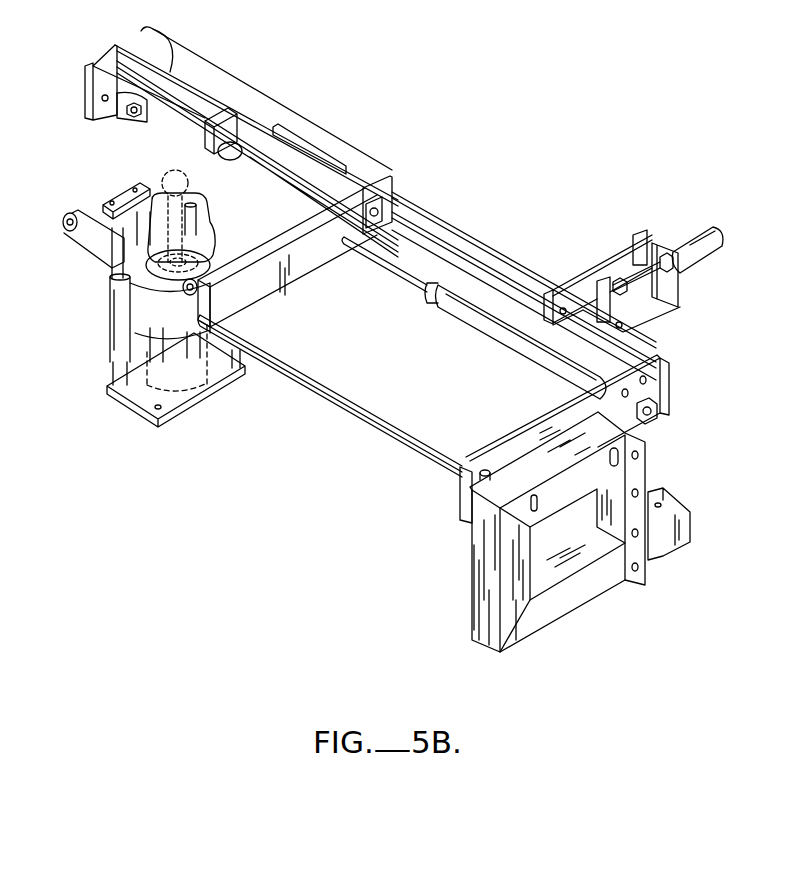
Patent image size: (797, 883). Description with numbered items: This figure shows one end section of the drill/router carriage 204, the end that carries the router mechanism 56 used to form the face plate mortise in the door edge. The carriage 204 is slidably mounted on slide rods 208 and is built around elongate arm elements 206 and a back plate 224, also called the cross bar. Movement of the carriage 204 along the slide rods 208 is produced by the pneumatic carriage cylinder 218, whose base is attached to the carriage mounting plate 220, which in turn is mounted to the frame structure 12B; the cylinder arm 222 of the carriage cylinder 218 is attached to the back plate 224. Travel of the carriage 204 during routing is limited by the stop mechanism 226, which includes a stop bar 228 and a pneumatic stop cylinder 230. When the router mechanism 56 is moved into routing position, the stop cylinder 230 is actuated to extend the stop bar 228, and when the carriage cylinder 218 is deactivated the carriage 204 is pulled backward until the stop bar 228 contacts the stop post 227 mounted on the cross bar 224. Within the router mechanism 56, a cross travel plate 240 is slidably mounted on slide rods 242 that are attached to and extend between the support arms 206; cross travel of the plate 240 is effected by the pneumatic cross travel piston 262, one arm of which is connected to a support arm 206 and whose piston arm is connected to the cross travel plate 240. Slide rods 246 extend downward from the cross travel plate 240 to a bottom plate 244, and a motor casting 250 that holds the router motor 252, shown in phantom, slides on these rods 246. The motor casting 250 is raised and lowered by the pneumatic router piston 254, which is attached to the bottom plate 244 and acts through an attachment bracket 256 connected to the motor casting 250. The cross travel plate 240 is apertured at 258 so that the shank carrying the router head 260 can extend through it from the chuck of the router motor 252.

The frame structure 12B is at (533, 613).
The router mechanism 56 is at (81, 286).
The drill/router carriage 204 is at (243, 75).
The elongate arm elements 206 is at (140, 31).
The slide rods 208 is at (147, 127).
The carriage cylinder 218 is at (495, 337).
The carriage mounting plate 220 is at (637, 423).
The cylinder arm 222 is at (405, 267).
The back plate 224 is at (297, 280).
The stop mechanism 226 is at (602, 233).
The stop post 227 is at (392, 197).
The stop bar 228 is at (598, 262).
The stop cylinder 230 is at (700, 247).
The cross travel plate 240 is at (297, 228).
The slide rods 242 is at (190, 130).
The bottom plate 244 is at (130, 400).
The slide rods 246 is at (112, 374).
The motor casting 250 is at (110, 318).
The router motor 252 is at (217, 377).
The router piston 254 is at (150, 343).
The attachment bracket 256 is at (122, 247).
The aperture 258 is at (193, 203).
The router head 260 is at (189, 184).
The cross travel piston 262 is at (150, 183).